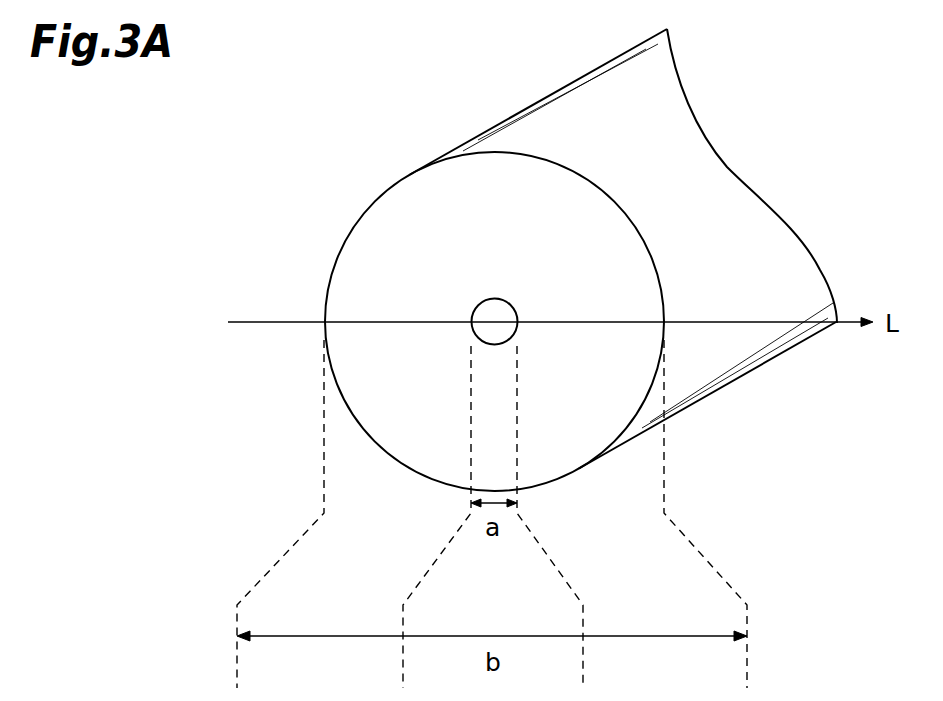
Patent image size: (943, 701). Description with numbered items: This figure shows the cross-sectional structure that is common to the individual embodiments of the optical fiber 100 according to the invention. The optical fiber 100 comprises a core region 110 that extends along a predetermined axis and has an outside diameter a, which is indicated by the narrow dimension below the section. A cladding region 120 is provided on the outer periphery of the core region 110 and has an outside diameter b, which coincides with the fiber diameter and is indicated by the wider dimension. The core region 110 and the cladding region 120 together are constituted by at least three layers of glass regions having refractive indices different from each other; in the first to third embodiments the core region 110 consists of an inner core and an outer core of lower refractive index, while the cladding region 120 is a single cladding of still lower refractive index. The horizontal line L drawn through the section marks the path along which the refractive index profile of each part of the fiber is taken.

The optical fiber 100 is at (777, 247).
The core region 110 is at (480, 300).
The cladding region 120 is at (617, 383).